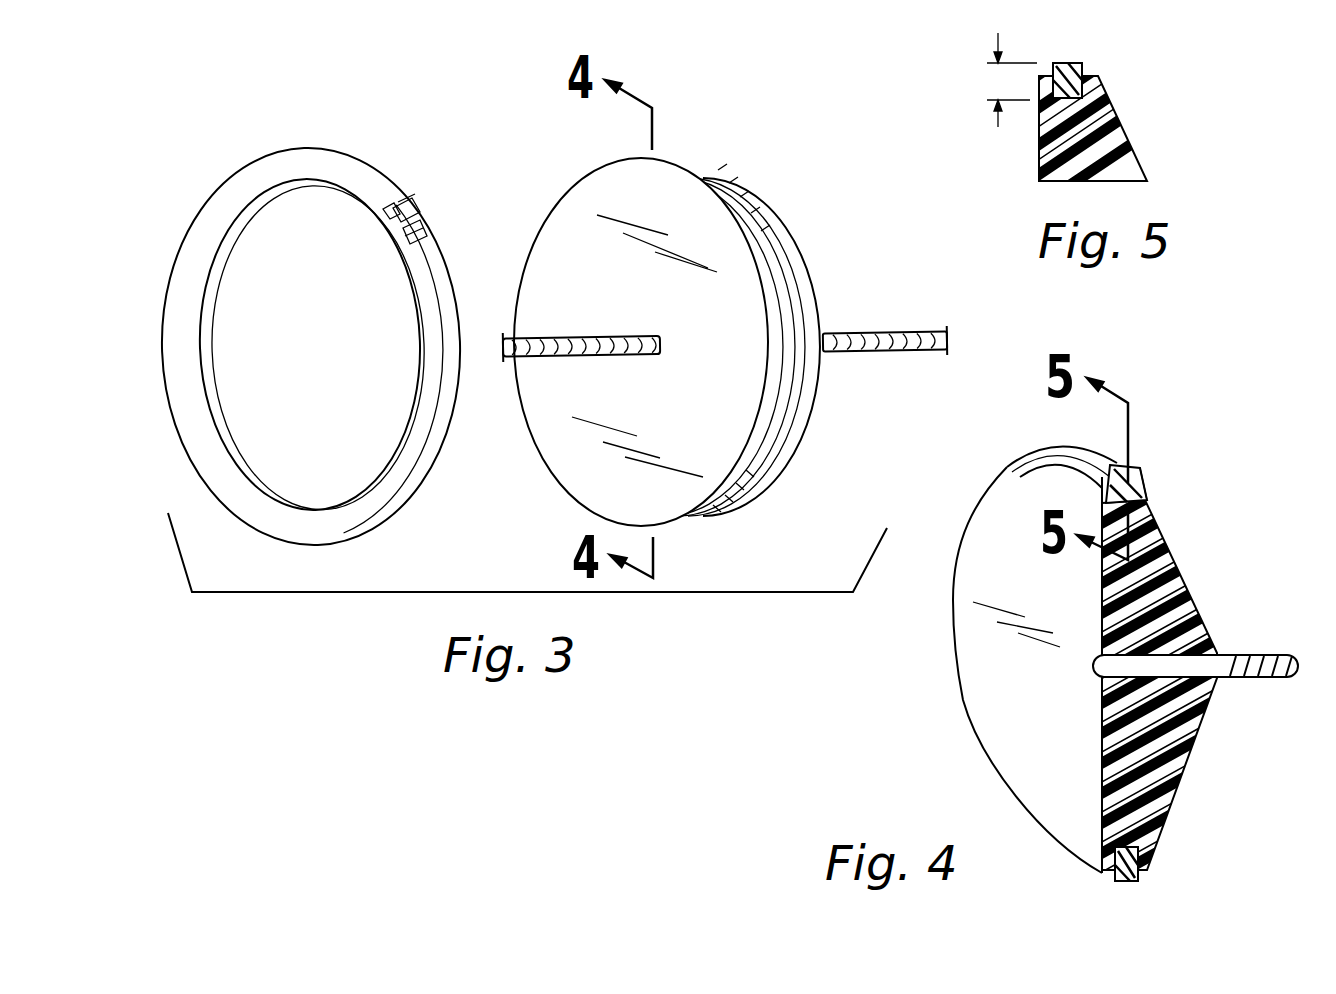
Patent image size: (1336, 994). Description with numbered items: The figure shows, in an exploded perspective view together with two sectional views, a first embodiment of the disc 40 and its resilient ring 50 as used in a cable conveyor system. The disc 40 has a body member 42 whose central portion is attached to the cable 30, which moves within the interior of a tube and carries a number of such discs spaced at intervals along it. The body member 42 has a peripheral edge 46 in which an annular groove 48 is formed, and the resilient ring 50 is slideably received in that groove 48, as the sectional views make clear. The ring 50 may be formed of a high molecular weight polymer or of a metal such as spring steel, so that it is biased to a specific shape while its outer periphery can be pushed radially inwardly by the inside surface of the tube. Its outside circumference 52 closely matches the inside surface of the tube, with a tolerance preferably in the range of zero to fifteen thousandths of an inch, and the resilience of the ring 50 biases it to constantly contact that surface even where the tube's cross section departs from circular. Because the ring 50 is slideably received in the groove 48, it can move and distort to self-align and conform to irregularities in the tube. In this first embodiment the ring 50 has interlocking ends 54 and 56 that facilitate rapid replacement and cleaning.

In FIG. 3, the cable 30 is at (562, 355).
In FIG. 4, the cable 30 is at (1245, 652).
In FIG. 3, the disc 40 is at (715, 218).
In FIG. 4, the disc 40 is at (990, 743).
In FIG. 3, the body member 42 is at (631, 318).
In FIG. 5, the body member 42 is at (1092, 137).
In FIG. 4, the body member 42 is at (1036, 725).
In FIG. 3, the peripheral edge 46 is at (783, 232).
In FIG. 4, the peripheral edge 46 is at (1107, 877).
In FIG. 3, the annular groove 48 is at (780, 277).
In FIG. 5, the annular groove 48 is at (1098, 93).
In FIG. 4, the annular groove 48 is at (1120, 502).
In FIG. 3, the resilient ring 50 is at (313, 162).
In FIG. 5, the resilient ring 50 is at (1082, 78).
In FIG. 4, the resilient ring 50 is at (1113, 475).
In FIG. 3, the outside circumference 52 is at (397, 197).
In FIG. 5, the outside circumference 52 is at (1066, 60).
In FIG. 4, the outside circumference 52 is at (1083, 450).
In FIG. 3, the interlocking end 54 is at (390, 213).
In FIG. 3, the interlocking end 56 is at (427, 231).